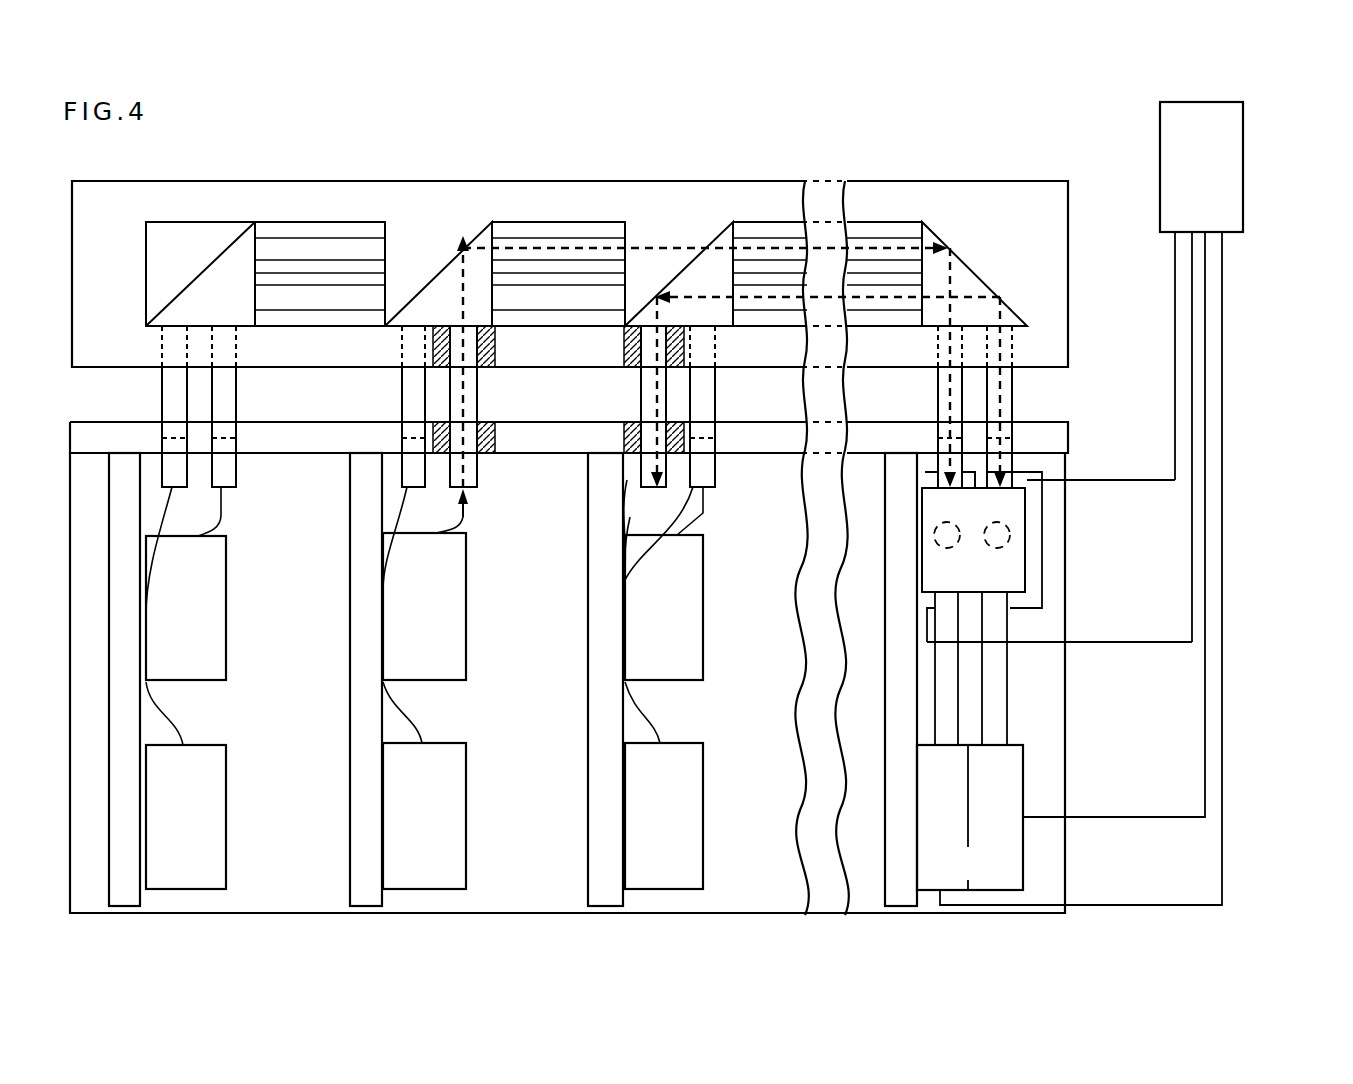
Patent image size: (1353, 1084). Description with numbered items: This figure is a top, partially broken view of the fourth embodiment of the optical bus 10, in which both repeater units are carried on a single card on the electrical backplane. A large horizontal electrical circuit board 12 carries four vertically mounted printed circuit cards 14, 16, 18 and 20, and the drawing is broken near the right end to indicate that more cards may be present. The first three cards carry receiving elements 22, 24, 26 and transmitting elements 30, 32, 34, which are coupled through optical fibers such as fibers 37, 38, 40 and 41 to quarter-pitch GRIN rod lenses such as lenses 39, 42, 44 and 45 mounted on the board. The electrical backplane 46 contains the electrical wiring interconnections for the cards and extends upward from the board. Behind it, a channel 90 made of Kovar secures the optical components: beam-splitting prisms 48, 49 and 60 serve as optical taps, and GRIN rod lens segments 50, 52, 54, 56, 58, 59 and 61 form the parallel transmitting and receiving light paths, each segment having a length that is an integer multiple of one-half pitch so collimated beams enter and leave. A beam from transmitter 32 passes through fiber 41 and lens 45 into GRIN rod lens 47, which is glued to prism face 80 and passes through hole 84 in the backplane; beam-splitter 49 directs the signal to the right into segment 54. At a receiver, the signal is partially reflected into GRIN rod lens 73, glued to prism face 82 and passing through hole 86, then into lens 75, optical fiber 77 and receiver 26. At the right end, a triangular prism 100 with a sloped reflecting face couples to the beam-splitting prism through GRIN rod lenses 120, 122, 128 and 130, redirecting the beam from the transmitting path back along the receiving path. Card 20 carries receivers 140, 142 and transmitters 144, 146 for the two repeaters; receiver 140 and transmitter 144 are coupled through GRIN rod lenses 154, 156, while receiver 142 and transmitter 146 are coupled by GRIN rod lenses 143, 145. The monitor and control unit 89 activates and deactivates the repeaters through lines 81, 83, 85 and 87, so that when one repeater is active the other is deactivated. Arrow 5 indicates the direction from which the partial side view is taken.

The arrow 5 is at (1250, 519).
The optical bus 10 is at (556, 154).
The electrical circuit board 12 is at (266, 871).
The printed circuit card 14 is at (116, 738).
The printed circuit card 16 is at (363, 723).
The printed circuit card 18 is at (595, 718).
The printed circuit card 20 is at (888, 672).
The receiving element 22 is at (167, 816).
The receiving element 24 is at (406, 823).
The receiving element 26 is at (652, 830).
The transmitting element 30 is at (177, 638).
The transmitting element 32 is at (412, 631).
The transmitting element 34 is at (652, 623).
The optical fiber 37 is at (407, 703).
The optical fiber 38 is at (172, 708).
The GRIN rod lens 39 is at (400, 472).
The optical fiber 40 is at (221, 515).
The optical fiber 41 is at (457, 522).
The GRIN lens 42 is at (158, 463).
The GRIN lens 44 is at (230, 478).
The GRIN rod lens 45 is at (525, 486).
The electrical backplane 46 is at (132, 420).
The GRIN rod lens 47 is at (470, 387).
The beam-splitting prism 48 is at (220, 210).
The beam-splitter 49 is at (408, 210).
The GRIN rod lens segment 50 is at (305, 210).
The GRIN rod lens segment 52 is at (307, 303).
The GRIN rod lens segment 54 is at (598, 240).
The GRIN rod lens segment 56 is at (788, 240).
The GRIN rod lens segment 58 is at (878, 237).
The GRIN rod lens segment 59 is at (772, 307).
The beam-splitting prism 60 is at (682, 232).
The GRIN rod lens segment 61 is at (873, 308).
The GRIN rod lens 73 is at (647, 387).
The GRIN rod lens 75 is at (627, 478).
The optical fiber 77 is at (630, 517).
The prism face 80 is at (390, 327).
The line 81 is at (1175, 323).
The prism face 82 is at (727, 327).
The line 83 is at (1192, 293).
The hole 84 is at (440, 420).
The line 85 is at (1222, 383).
The hole 86 is at (638, 425).
The line 87 is at (1205, 415).
The monitor and control unit 89 is at (1184, 174).
The channel 90 is at (135, 208).
The prism 100 is at (958, 275).
The GRIN rod lens 120 is at (942, 388).
The GRIN rod lens 122 is at (933, 460).
The GRIN rod lens 128 is at (1013, 455).
The GRIN rod lens 130 is at (1013, 400).
The receiver 140 is at (1015, 603).
The receiver 142 is at (1000, 842).
The GRIN rod lens 143 is at (995, 712).
The transmitter 144 is at (963, 602).
The GRIN rod lens 145 is at (943, 685).
The transmitter 146 is at (955, 805).
The GRIN rod lens 154 is at (1010, 538).
The GRIN rod lens 156 is at (950, 547).